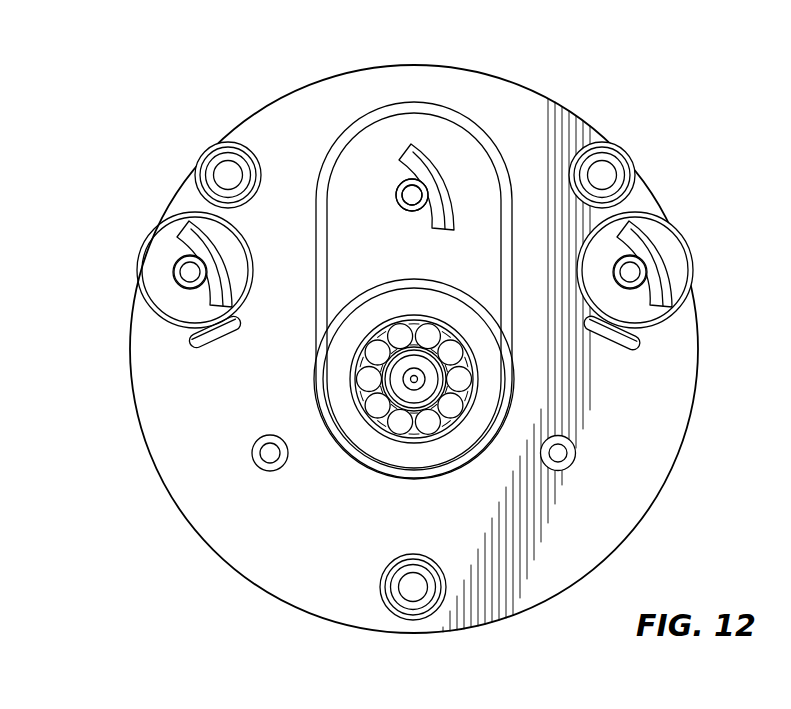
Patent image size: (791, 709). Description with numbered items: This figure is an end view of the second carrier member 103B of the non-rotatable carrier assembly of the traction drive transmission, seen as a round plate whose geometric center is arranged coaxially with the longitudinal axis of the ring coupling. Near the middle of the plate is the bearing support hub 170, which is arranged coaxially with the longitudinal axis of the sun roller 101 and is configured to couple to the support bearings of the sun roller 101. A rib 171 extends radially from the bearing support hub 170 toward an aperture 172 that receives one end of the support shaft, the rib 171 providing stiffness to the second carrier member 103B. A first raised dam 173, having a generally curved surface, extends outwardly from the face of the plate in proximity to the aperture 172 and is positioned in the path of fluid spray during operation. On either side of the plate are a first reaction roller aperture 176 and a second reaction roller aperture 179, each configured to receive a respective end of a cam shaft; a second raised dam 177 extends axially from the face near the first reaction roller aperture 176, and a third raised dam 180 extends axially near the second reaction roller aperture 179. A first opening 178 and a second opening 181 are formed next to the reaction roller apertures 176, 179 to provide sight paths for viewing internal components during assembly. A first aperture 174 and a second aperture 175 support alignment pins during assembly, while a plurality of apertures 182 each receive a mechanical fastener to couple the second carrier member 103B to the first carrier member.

The second carrier member 103B is at (100, 100).
The sun roller 101 is at (395, 403).
The bearing support hub 170 is at (455, 466).
The rib 171 is at (513, 172).
The aperture 172 is at (397, 191).
The first raised dam 173 is at (408, 145).
The first aperture 174 is at (251, 457).
The second aperture 175 is at (576, 452).
The first reaction roller aperture 176 is at (173, 272).
The second raised dam 177 is at (186, 232).
The first opening 178 is at (207, 348).
The second reaction roller aperture 179 is at (637, 288).
The third raised dam 180 is at (633, 227).
The second opening 181 is at (633, 350).
The apertures 182 is at (218, 172).